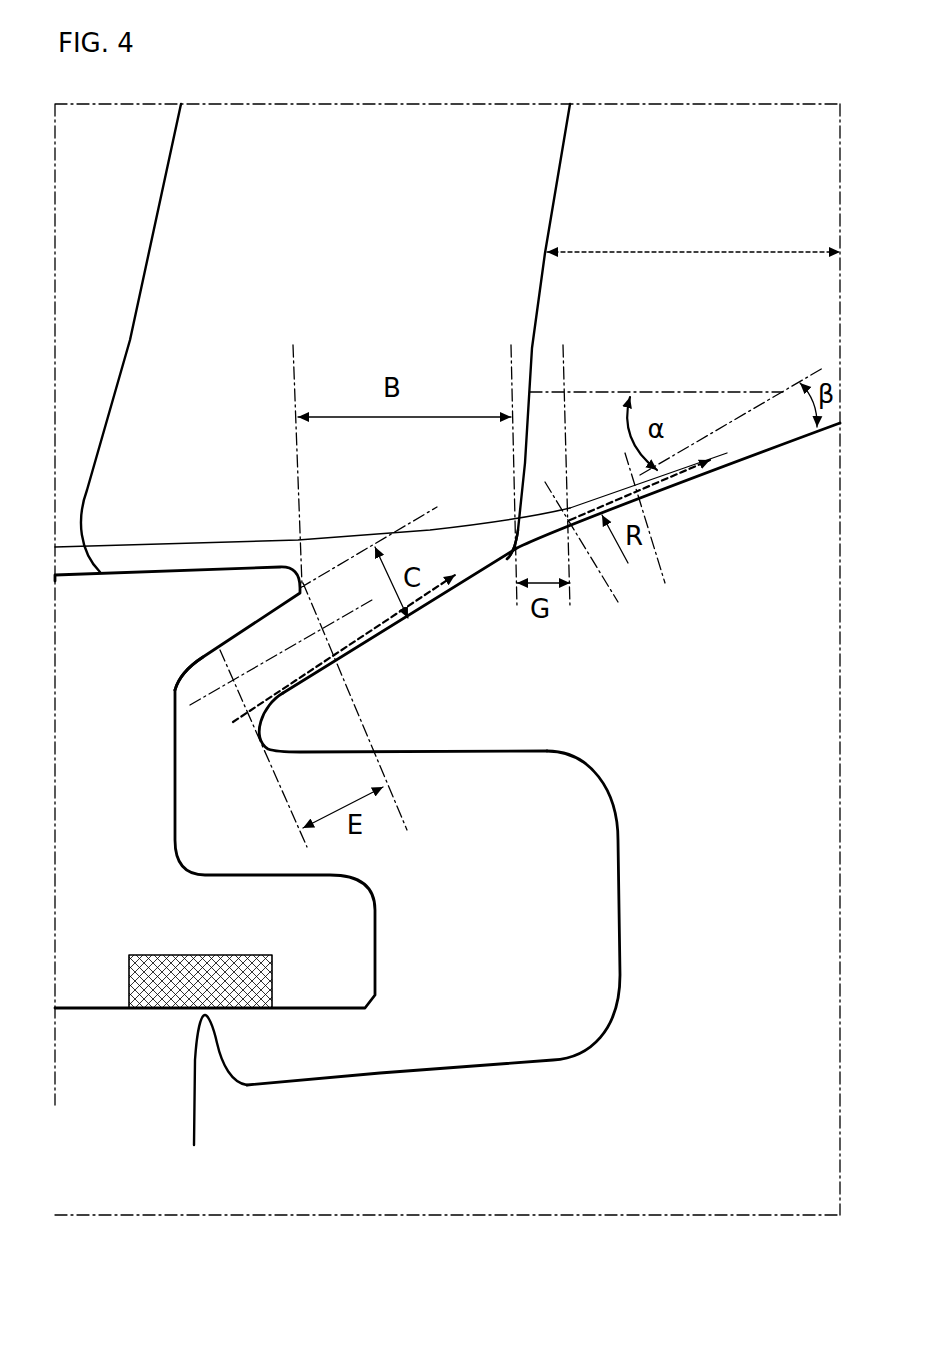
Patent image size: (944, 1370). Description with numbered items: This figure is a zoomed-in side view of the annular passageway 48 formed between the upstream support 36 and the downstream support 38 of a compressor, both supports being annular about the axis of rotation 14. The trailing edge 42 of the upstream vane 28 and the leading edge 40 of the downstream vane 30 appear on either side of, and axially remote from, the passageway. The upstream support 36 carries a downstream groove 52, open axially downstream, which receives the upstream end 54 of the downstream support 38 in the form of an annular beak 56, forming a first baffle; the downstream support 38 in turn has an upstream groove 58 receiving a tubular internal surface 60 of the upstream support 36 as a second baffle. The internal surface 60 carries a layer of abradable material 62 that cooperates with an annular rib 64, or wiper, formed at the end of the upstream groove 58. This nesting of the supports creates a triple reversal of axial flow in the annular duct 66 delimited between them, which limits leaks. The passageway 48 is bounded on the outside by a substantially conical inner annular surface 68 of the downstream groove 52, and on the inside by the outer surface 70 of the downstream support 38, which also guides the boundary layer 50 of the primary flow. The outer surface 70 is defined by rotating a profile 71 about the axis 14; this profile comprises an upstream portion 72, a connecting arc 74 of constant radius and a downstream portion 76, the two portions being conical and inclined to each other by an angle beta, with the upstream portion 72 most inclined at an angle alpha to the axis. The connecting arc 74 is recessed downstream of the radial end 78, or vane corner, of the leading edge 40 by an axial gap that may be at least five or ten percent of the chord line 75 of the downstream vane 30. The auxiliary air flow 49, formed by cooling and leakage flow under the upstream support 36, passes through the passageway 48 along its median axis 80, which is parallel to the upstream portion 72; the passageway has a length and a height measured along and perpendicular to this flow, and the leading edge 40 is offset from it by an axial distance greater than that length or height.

The axis of rotation 14 is at (510, 1213).
The upstream vane 28 is at (81, 238).
The downstream vane 30 is at (637, 319).
The upstream support 36 is at (89, 719).
The downstream support 38 is at (736, 691).
The leading edge 40 is at (553, 192).
The trailing edge 42 is at (183, 133).
The annular passageway 48 is at (247, 652).
The air flow 49 is at (353, 637).
The boundary layer 50 is at (203, 540).
The downstream groove 52 is at (204, 813).
The upstream end 54 is at (271, 742).
The annular beak 56 is at (429, 734).
The upstream groove 58 is at (462, 956).
The internal surface 60 is at (227, 936).
The layer of abradable material 62 is at (180, 995).
The annular rib 64 is at (207, 1047).
The annular duct 66 is at (404, 873).
The inner annular surface 68 is at (203, 657).
The outer surface 70 is at (738, 460).
The profile 71 is at (588, 637).
The upstream portion 72 is at (455, 612).
The connecting arc 74 is at (625, 455).
The chord line 75 is at (697, 252).
The downstream portion 76 is at (712, 502).
The radial end 78 is at (507, 558).
The median axis 80 is at (330, 623).